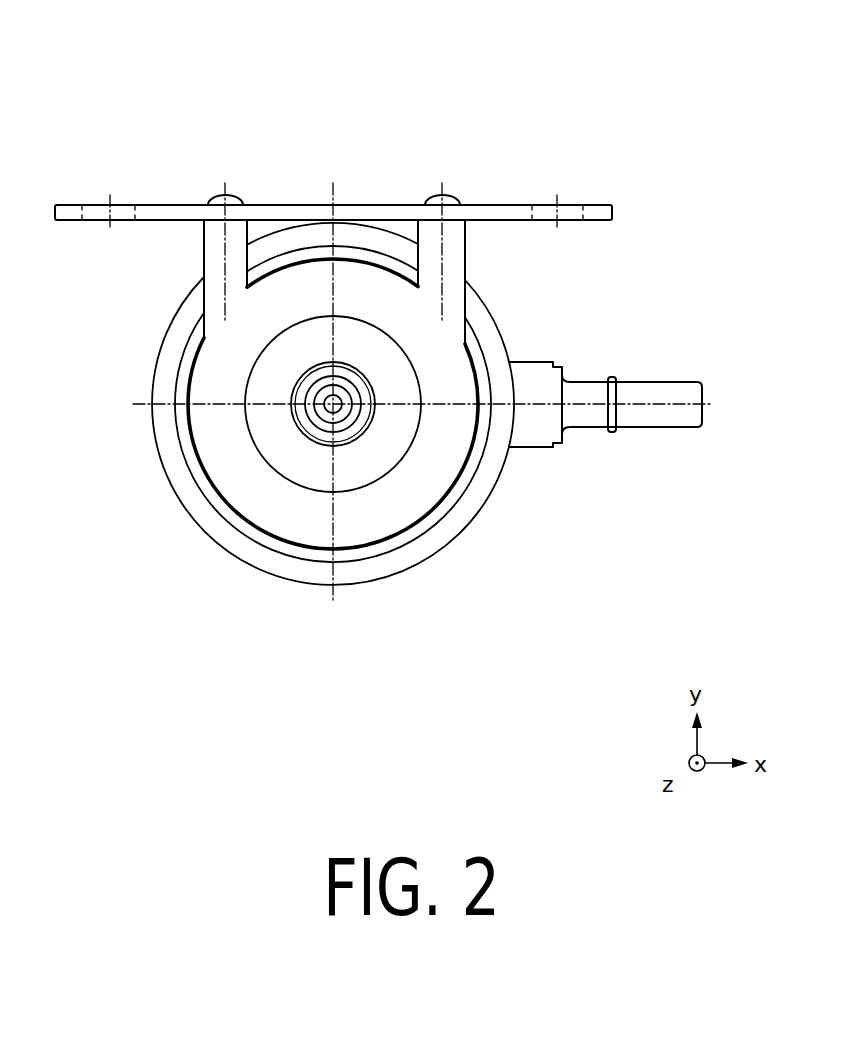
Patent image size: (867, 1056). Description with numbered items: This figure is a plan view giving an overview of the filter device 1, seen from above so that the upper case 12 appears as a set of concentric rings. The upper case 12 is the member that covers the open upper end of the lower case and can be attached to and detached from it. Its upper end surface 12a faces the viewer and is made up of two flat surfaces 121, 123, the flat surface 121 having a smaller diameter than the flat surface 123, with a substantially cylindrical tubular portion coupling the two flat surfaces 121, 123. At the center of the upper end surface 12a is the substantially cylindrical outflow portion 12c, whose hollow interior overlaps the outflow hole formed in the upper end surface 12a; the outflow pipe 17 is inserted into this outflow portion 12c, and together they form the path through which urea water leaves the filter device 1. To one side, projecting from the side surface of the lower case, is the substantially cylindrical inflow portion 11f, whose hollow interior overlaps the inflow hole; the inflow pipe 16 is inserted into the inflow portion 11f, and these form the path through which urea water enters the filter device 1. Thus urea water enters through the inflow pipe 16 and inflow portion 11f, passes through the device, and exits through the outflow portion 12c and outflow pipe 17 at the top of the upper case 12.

The filter device 1 is at (668, 50).
The upper case 12 is at (377, 404).
The upper end surface 12a is at (380, 459).
The flat surface 121 is at (389, 455).
The flat surface 123 is at (348, 440).
The outflow portion 12c is at (265, 498).
The outflow pipe 17 is at (232, 463).
The inflow portion 11f is at (552, 439).
The inflow pipe 16 is at (652, 435).